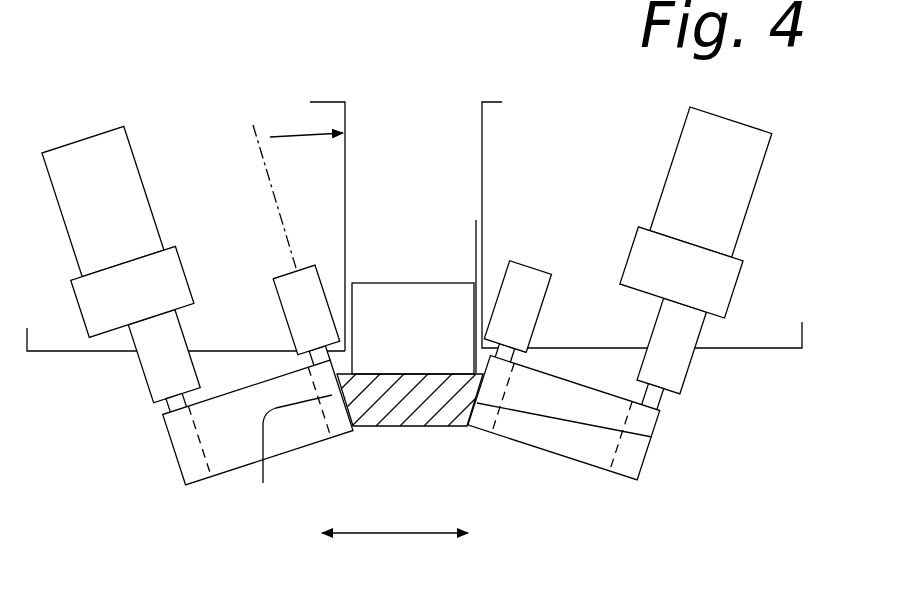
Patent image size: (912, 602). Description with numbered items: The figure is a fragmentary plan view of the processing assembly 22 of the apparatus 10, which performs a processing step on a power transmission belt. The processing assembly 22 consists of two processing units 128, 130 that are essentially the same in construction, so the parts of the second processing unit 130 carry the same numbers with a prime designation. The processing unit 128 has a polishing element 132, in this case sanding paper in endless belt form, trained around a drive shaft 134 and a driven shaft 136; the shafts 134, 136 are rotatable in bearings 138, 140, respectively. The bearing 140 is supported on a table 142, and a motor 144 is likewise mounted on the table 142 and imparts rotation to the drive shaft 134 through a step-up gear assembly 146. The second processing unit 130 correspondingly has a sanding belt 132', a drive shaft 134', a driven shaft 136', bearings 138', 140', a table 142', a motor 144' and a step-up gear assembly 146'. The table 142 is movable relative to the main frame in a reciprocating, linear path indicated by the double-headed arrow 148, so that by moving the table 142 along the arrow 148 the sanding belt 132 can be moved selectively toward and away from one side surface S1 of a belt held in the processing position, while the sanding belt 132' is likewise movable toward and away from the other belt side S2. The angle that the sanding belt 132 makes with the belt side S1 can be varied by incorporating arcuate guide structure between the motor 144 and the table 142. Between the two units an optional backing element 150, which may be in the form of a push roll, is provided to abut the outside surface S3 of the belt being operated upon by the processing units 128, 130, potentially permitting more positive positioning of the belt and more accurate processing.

The clamping apparatus 10 is at (562, 147).
The processing assembly 22 is at (247, 103).
The processing unit 128 is at (202, 344).
The processing unit 130 is at (657, 327).
The polishing element 132 is at (269, 461).
The sanding belt 132' is at (561, 451).
The drive shaft 134 is at (209, 484).
The drive shaft 134' is at (633, 475).
The driven shaft 136 is at (341, 442).
The driven shaft 136' is at (488, 438).
The bearing 138 is at (117, 363).
The bearing 138' is at (717, 357).
The bearing 140 is at (267, 317).
The bearing 140' is at (566, 314).
The table 142 is at (136, 271).
The table 142' is at (690, 261).
The motor 144 is at (103, 201).
The motor 144' is at (711, 182).
The step-up gear assembly 146 is at (132, 291).
The step-up gear assembly 146' is at (681, 272).
The double-headed arrow 148 is at (425, 518).
The backing element 150 is at (393, 369).
The side surface S1 is at (263, 483).
The belt side S2 is at (652, 437).
The outside surface S3 is at (476, 220).